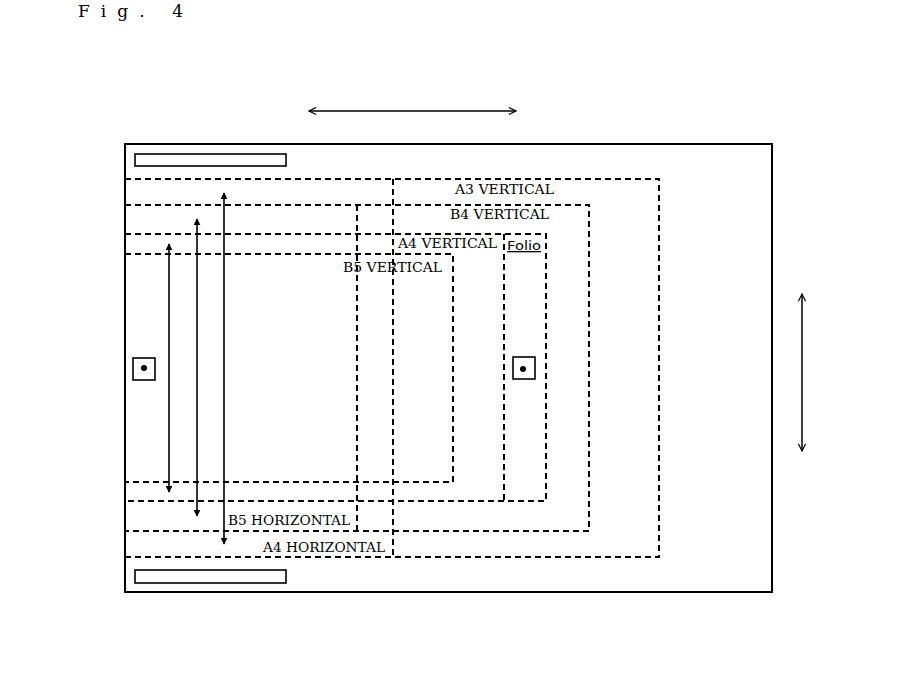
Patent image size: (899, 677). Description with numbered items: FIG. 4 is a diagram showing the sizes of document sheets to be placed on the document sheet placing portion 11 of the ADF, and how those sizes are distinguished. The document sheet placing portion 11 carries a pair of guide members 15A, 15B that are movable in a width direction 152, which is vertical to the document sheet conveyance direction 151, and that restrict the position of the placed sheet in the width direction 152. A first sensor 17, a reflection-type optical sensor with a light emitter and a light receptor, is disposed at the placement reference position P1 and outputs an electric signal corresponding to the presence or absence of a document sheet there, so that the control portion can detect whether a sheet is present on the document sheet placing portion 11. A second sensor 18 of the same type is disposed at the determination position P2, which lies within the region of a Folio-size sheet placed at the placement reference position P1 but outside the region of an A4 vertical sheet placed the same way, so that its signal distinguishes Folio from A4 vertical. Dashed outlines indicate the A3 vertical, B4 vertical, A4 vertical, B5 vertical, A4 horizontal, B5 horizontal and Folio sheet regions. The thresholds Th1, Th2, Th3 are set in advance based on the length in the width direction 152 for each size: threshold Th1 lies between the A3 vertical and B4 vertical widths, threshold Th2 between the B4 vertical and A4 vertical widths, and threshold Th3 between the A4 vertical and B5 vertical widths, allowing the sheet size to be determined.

The document sheet placing portion 11 is at (641, 592).
The guide member 15A is at (286, 158).
The guide member 15B is at (286, 573).
The document sheet conveyance direction 151 is at (415, 111).
The width direction 152 is at (803, 372).
The first sensor 17 is at (146, 357).
The second sensor 18 is at (525, 357).
The placement reference position P1 is at (133, 368).
The determination position P2 is at (513, 369).
The threshold Th1 is at (224, 320).
The threshold Th2 is at (197, 365).
The threshold Th3 is at (169, 408).